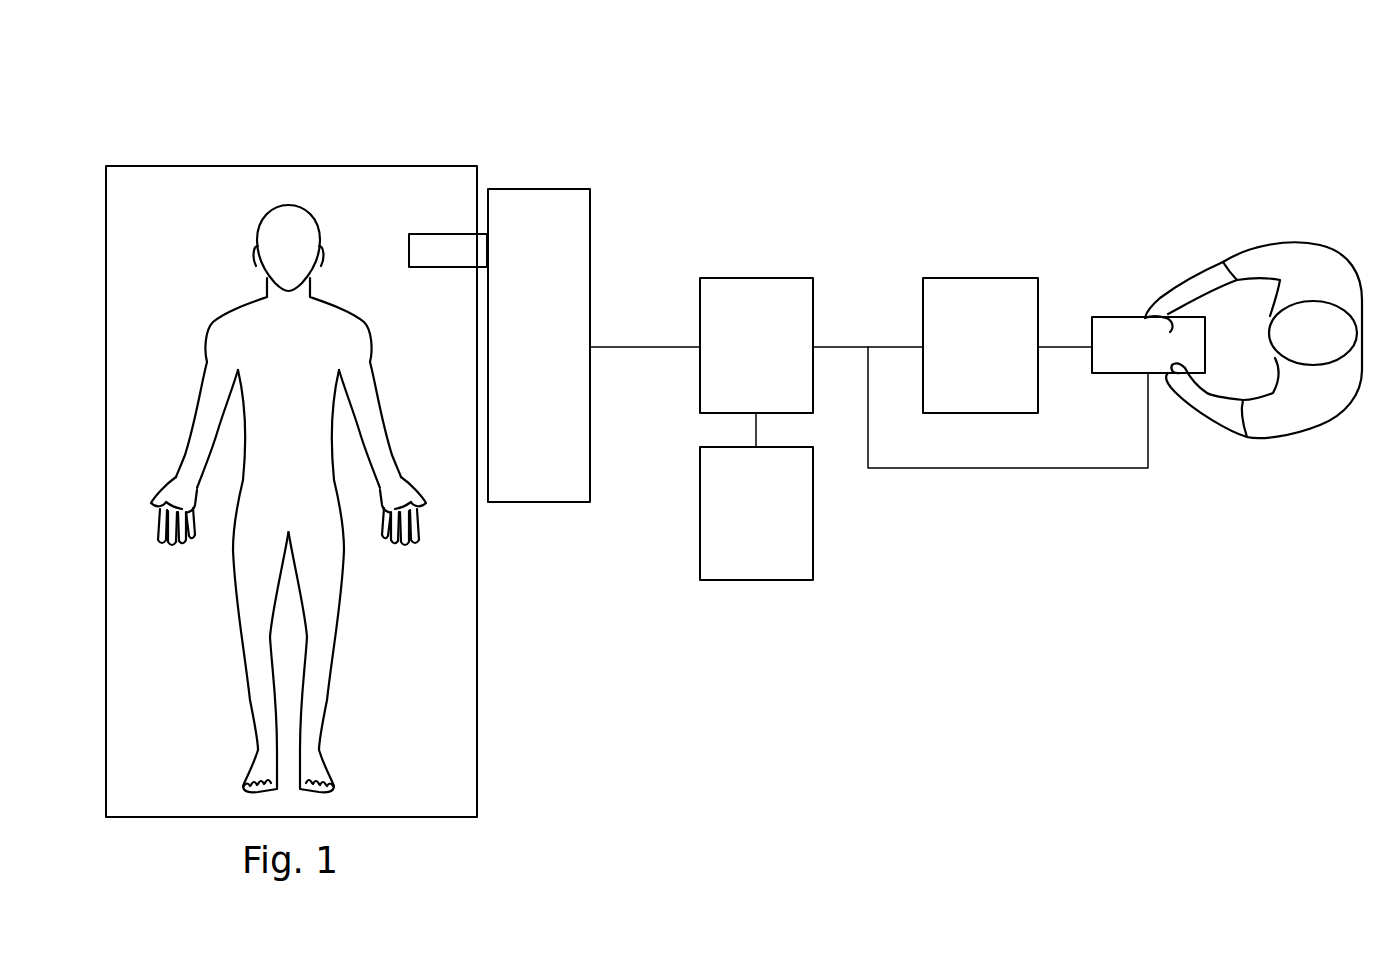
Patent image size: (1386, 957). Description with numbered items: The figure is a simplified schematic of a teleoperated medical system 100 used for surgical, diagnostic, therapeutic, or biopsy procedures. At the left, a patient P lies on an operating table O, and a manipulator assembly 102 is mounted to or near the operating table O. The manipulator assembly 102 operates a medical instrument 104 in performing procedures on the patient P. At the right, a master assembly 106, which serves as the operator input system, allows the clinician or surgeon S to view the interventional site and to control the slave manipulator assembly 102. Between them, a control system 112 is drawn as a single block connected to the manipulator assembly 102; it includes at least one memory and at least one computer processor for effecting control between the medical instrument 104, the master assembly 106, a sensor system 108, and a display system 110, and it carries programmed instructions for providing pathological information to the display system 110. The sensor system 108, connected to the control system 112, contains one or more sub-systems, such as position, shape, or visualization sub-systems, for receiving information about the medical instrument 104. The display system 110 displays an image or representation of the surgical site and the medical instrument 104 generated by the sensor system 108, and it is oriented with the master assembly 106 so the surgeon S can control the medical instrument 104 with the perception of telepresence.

The teleoperated medical system 100 is at (291, 118).
The manipulator assembly 102 is at (557, 362).
The medical instrument 104 is at (432, 234).
The master assembly 106 is at (1126, 317).
The sensor system 108 is at (776, 530).
The display system 110 is at (1000, 362).
The control system 112 is at (776, 362).
The operating table O is at (478, 569).
The patient P is at (238, 583).
The surgeon S is at (1281, 238).